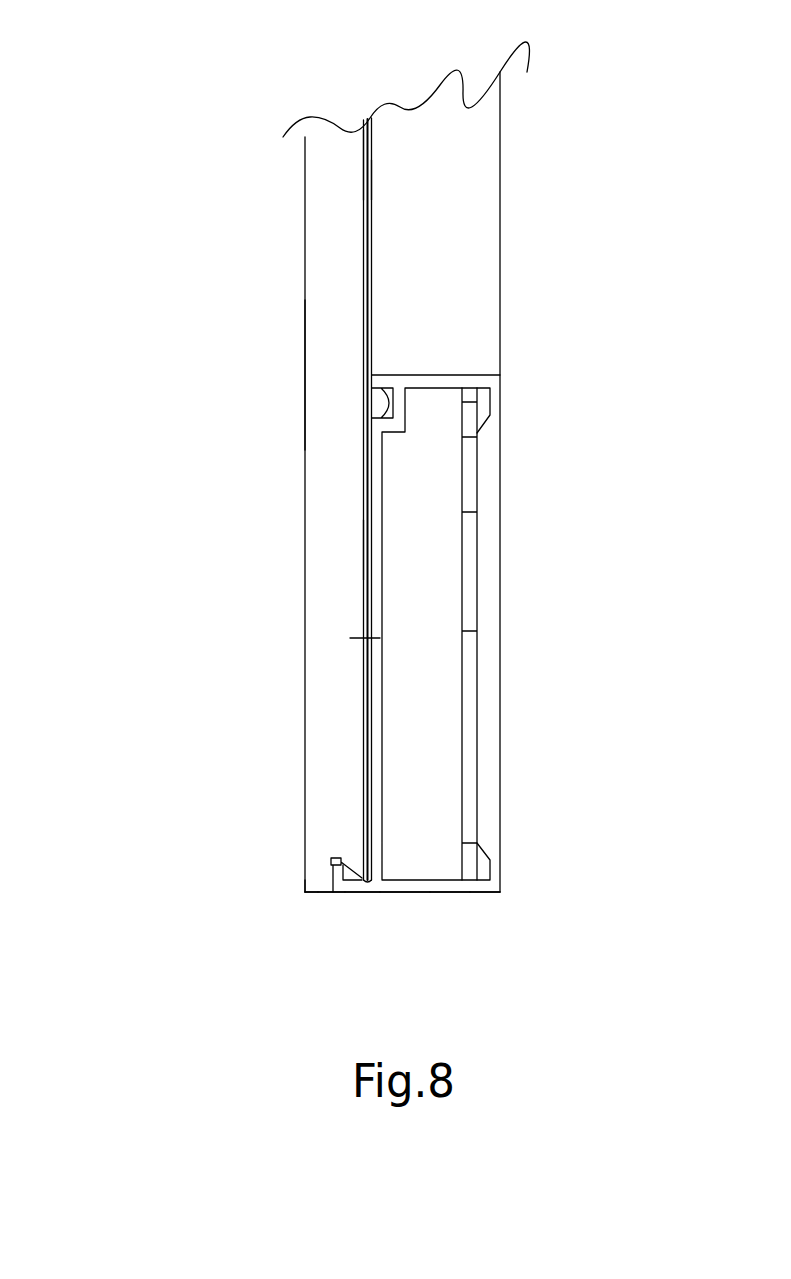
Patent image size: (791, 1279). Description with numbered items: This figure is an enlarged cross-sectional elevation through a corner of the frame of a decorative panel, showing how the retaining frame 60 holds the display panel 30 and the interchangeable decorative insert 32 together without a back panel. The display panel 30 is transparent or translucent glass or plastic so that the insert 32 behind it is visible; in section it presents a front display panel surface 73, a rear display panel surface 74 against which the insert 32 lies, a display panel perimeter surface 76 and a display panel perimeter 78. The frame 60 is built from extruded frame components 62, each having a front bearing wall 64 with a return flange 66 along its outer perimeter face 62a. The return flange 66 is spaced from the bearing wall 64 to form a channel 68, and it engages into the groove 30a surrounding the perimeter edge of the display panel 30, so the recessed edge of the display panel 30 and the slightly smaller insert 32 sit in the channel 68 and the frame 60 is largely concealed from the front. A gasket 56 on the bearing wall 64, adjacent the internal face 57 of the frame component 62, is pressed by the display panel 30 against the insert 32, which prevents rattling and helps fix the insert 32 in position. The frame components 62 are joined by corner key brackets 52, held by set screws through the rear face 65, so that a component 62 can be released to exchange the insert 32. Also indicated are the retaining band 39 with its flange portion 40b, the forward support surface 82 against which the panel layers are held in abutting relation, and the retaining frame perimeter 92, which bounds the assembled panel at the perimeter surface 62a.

The display panel 30 is at (322, 777).
The groove 30a is at (338, 858).
The interchangeable decorative insert 32 is at (372, 233).
The retaining band 39 is at (437, 895).
The flange portion 40b is at (360, 895).
The corner key bracket 52 is at (467, 480).
The gasket 56 is at (378, 395).
The internal face 57 is at (437, 373).
The retaining frame 60 is at (525, 140).
The frame component 62 is at (502, 222).
The outer perimeter face 62a is at (400, 895).
The front bearing wall 64 is at (372, 638).
The rear face 65 is at (488, 567).
The return flange 66 is at (308, 892).
The channel 68 is at (350, 864).
The front display panel surface 73 is at (303, 382).
The rear display panel surface 74 is at (363, 152).
The display panel perimeter surface 76 is at (310, 895).
The display panel perimeter 78 is at (325, 895).
The forward support surface 82 is at (373, 183).
The retaining frame perimeter 92 is at (493, 895).